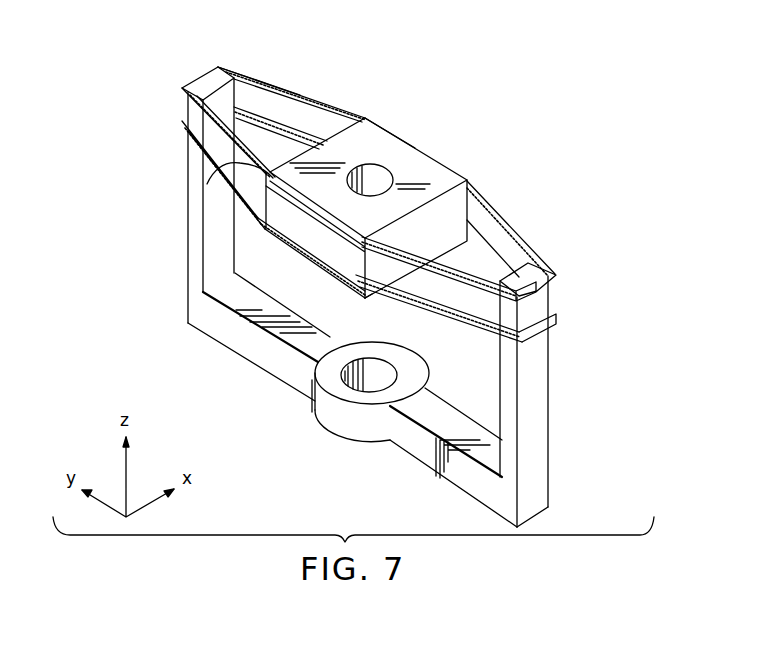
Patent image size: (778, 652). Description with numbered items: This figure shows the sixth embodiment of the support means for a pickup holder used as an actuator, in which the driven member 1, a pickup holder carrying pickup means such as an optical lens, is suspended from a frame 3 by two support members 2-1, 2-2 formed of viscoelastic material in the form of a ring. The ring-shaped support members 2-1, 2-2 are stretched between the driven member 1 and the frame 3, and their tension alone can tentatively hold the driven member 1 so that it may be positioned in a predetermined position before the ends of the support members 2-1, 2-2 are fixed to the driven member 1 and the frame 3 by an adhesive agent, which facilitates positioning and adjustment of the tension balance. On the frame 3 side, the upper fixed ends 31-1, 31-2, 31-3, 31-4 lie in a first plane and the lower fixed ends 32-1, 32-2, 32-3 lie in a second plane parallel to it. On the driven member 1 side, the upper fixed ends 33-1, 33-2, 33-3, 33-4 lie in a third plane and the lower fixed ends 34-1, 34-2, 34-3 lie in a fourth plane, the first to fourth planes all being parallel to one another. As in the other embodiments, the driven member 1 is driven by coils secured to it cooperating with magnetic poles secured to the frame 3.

The driven member 1 is at (414, 155).
The support member 2-1 is at (327, 107).
The support member 2-2 is at (270, 122).
The frame 3 is at (230, 341).
The upper fixed end 31-1 is at (558, 276).
The upper fixed end 31-2 is at (546, 290).
The upper fixed end 31-3 is at (182, 90).
The upper fixed end 31-4 is at (215, 65).
The lower fixed end 32-1 is at (556, 320).
The lower fixed end 32-2 is at (519, 342).
The lower fixed end 32-3 is at (182, 125).
The upper fixed end 33-1 is at (468, 180).
The upper fixed end 33-2 is at (369, 240).
The upper fixed end 33-3 is at (270, 172).
The upper fixed end 33-4 is at (362, 117).
The lower fixed end 34-1 is at (472, 236).
The lower fixed end 34-2 is at (362, 297).
The lower fixed end 34-3 is at (265, 237).